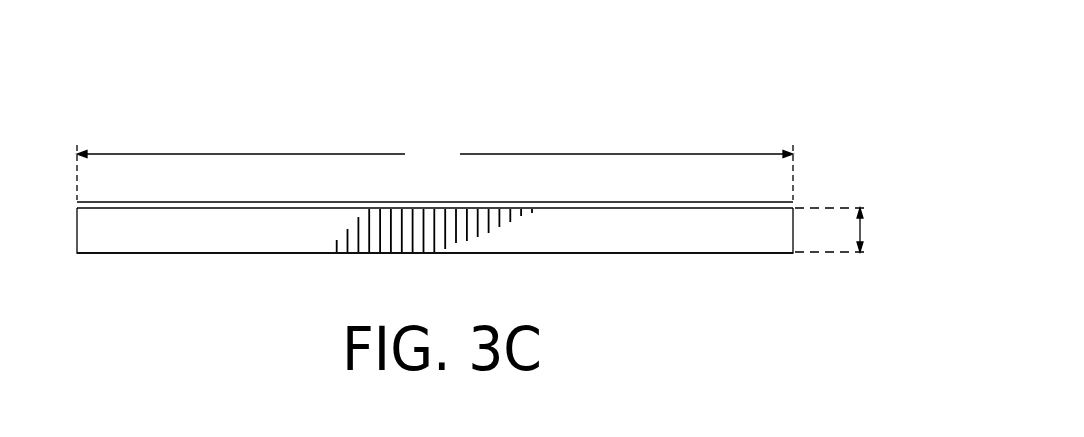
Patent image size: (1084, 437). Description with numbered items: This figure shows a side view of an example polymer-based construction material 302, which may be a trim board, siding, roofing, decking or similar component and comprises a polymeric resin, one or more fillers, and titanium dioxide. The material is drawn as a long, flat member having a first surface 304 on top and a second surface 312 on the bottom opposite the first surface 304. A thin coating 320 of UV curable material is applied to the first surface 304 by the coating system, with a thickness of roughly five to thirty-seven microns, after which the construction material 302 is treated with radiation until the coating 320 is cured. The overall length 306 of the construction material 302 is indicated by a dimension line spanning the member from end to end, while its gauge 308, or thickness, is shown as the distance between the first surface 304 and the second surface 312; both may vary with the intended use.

The polymer-based construction material 302 is at (135, 237).
The first surface 304 is at (588, 206).
The length 306 is at (435, 170).
The gauge 308 is at (863, 232).
The second surface 312 is at (588, 254).
The coating 320 is at (143, 205).